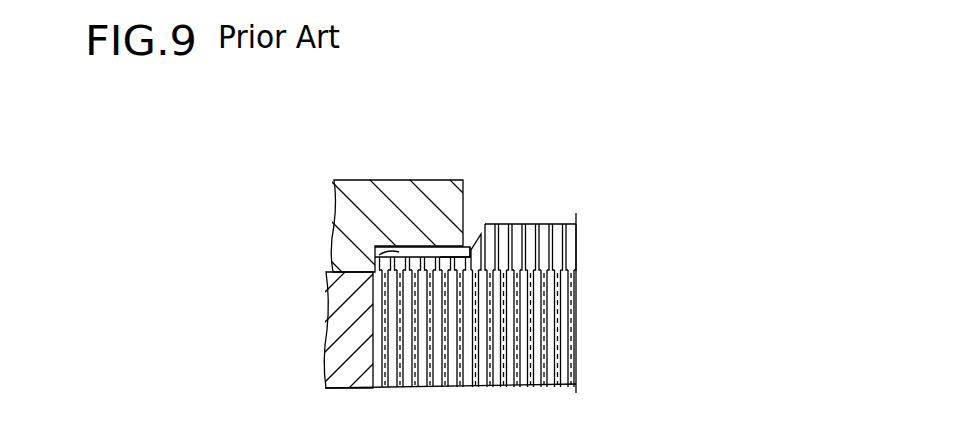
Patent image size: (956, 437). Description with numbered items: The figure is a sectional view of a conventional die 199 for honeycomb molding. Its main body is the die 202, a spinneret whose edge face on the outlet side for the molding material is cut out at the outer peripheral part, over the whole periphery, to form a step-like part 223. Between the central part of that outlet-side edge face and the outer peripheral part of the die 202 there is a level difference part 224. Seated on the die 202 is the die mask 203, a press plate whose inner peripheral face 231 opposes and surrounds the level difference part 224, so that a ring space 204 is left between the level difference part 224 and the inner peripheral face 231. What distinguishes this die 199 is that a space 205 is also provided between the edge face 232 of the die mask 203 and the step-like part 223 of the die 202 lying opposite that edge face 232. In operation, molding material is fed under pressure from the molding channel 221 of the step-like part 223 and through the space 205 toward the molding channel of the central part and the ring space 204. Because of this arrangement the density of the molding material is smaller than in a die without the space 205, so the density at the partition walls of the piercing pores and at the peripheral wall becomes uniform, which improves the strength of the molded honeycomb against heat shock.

The die for honeycomb molding 199 is at (533, 124).
The die 202 is at (419, 396).
The die mask 203 is at (332, 208).
The ring space 204 is at (472, 230).
The space 205 is at (327, 312).
The molding channel 221 is at (540, 223).
The step-like part 223 is at (400, 240).
The level difference part 224 is at (487, 225).
The inner peripheral face 231 is at (457, 245).
The edge face 232 is at (417, 251).